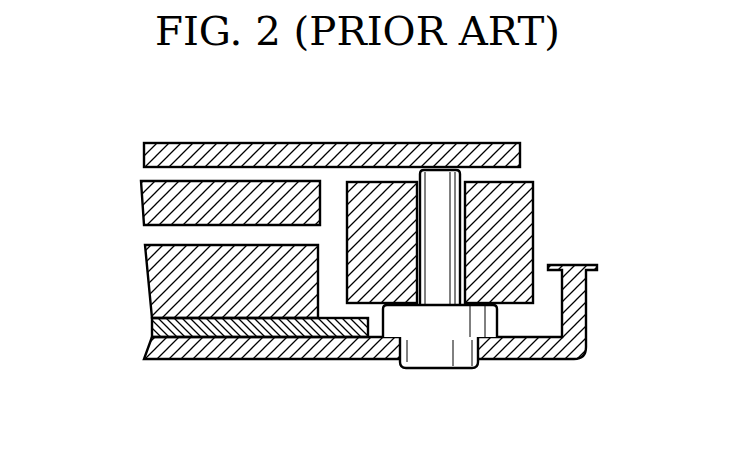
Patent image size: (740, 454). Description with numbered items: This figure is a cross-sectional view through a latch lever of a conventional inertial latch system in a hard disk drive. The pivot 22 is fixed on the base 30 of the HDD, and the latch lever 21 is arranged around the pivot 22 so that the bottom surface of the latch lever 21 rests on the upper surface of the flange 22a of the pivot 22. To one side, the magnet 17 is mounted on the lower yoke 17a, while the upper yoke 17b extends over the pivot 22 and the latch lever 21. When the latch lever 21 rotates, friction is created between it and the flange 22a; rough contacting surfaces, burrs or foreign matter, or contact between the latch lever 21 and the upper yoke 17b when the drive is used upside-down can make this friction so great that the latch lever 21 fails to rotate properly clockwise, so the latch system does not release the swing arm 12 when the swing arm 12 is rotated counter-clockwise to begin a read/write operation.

The swing arm 12 is at (155, 203).
The magnet 17 is at (170, 287).
The lower yoke 17a is at (280, 322).
The upper yoke 17b is at (359, 147).
The latch lever 21 is at (517, 203).
The pivot 22 is at (448, 240).
The flange 22a is at (493, 318).
The base 30 is at (218, 340).